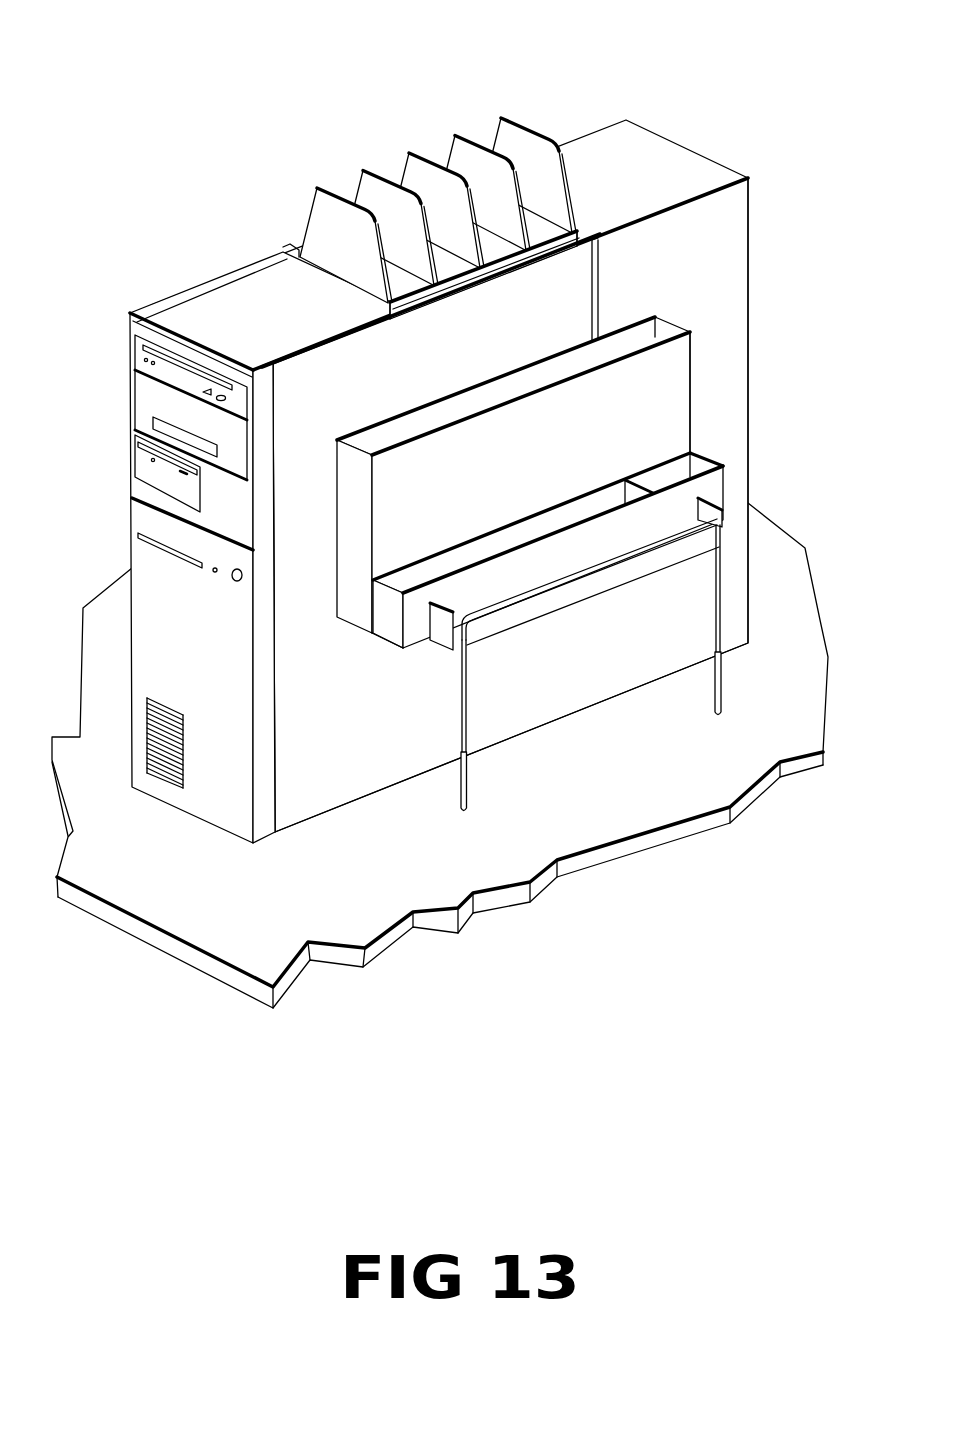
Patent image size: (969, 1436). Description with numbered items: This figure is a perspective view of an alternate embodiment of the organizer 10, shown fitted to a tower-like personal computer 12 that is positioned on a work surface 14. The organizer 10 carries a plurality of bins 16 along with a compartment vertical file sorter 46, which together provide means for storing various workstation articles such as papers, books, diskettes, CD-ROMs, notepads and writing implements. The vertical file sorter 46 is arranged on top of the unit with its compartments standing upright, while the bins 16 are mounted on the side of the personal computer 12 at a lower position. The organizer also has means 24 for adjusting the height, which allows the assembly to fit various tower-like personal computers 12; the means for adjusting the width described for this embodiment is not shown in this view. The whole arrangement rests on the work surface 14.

The organizer 10 is at (586, 115).
The personal computer 12 is at (737, 203).
The work surface 14 is at (782, 593).
The bins 16 is at (703, 467).
The means for adjusting the height 24 is at (468, 790).
The compartment vertical file sorter 46 is at (380, 172).